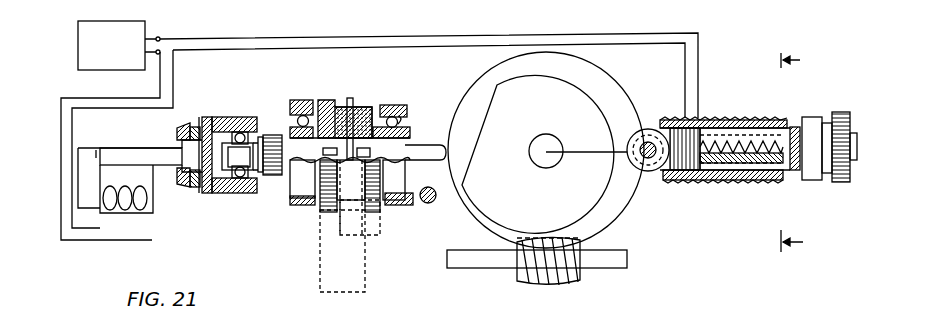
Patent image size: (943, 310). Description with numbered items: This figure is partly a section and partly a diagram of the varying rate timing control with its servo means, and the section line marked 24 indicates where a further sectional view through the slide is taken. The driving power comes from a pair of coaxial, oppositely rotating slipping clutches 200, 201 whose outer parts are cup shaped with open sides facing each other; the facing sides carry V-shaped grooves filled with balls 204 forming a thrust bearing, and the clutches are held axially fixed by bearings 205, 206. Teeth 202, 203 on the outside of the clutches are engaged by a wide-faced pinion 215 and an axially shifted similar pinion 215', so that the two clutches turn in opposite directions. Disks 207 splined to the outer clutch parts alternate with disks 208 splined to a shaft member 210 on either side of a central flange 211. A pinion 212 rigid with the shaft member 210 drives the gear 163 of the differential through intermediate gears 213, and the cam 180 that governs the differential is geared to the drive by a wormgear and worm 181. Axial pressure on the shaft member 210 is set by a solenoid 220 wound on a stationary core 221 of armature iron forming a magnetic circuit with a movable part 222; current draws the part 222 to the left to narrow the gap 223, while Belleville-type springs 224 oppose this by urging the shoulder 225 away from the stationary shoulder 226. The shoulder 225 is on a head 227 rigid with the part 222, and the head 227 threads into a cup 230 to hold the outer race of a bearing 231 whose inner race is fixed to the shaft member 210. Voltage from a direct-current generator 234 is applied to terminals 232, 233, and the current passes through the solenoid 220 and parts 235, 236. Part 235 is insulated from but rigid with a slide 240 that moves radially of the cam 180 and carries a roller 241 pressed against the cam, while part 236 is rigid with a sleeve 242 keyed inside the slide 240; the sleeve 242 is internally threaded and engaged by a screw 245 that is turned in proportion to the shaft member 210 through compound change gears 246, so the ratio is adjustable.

The direct-current generator 234 is at (123, 27).
The terminal 232 is at (162, 37).
The terminal 233 is at (180, 38).
The solenoid 220 is at (133, 215).
The stationary core 221 is at (152, 204).
The movable part 222 is at (118, 152).
The gap 223 is at (100, 150).
The Belleville-type springs 224 is at (180, 129).
The shoulder 225 is at (212, 112).
The stationary shoulder 226 is at (188, 193).
The head 227 is at (226, 117).
The cup 230 is at (248, 118).
The bearing 231 is at (238, 132).
The pinion 212 is at (283, 178).
The bearing 205 is at (296, 113).
The disks 207 is at (392, 113).
The slipping clutch 200 is at (324, 98).
The balls 204 is at (350, 105).
The slipping clutch 201 is at (373, 103).
The bearing 206 is at (398, 124).
The shaft member 210 is at (430, 140).
The disks 208 is at (323, 147).
The central flange 211 is at (371, 152).
The teeth 202 is at (326, 214).
The teeth 203 is at (374, 209).
The wide-faced pinion 215 is at (382, 205).
The pinion 215' is at (377, 219).
The cam 180 is at (622, 180).
The worm 181 is at (520, 275).
The gear 163 is at (528, 296).
The intermediate gears 213 is at (585, 308).
The roller 241 is at (648, 128).
The slide 240 is at (772, 128).
The part 236 is at (708, 180).
The part 235 is at (680, 188).
The sleeve 242 is at (770, 178).
The screw 245 is at (796, 122).
The compound change gears 246 is at (835, 180).
The section line 24- 24 is at (772, 153).